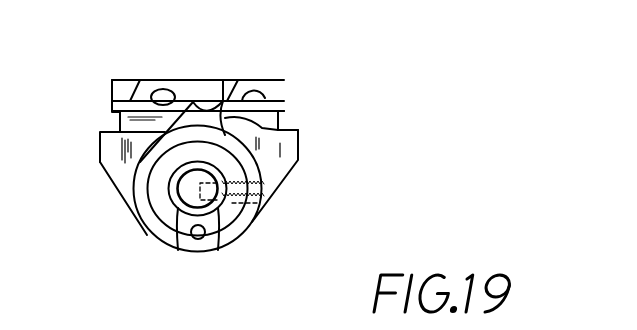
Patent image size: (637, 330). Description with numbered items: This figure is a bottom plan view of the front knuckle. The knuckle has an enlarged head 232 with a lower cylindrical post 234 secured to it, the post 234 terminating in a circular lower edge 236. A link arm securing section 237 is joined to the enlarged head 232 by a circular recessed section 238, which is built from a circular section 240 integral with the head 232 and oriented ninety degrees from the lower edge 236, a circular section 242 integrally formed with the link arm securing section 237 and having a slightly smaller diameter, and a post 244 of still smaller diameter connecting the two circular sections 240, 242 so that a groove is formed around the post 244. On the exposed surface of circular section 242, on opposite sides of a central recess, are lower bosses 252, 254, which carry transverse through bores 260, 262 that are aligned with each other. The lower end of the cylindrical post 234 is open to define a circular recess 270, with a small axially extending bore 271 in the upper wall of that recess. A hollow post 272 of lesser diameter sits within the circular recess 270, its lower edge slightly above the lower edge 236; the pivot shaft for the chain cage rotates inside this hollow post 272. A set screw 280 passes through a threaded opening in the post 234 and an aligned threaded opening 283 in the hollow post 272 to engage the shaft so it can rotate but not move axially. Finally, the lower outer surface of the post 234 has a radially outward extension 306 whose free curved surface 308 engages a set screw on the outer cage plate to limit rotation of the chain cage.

The enlarged head 232 is at (108, 170).
The lower cylindrical post 234 is at (240, 236).
The circular lower edge 236 is at (148, 235).
The link arm securing section 237 is at (279, 73).
The circular recessed section 238 is at (101, 122).
The circular section 240 is at (298, 140).
The circular section 242 is at (112, 111).
The post 244 is at (280, 120).
The lower boss 252 is at (145, 80).
The lower boss 254 is at (262, 80).
The transverse through bore 260 is at (163, 89).
The transverse through bore 262 is at (265, 98).
The circular recess 270 is at (258, 206).
The small axially extending bore 271 is at (208, 253).
The hollow post 272 is at (180, 253).
The set screw 280 is at (270, 193).
The threaded opening 283 is at (230, 257).
The extension 306 is at (191, 104).
The free curved surface 308 is at (298, 130).